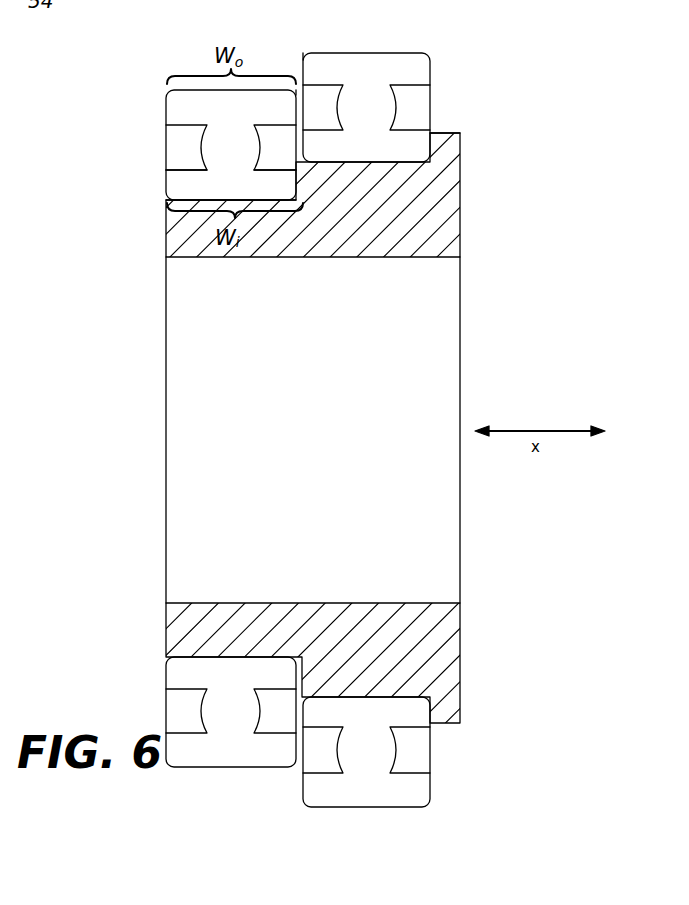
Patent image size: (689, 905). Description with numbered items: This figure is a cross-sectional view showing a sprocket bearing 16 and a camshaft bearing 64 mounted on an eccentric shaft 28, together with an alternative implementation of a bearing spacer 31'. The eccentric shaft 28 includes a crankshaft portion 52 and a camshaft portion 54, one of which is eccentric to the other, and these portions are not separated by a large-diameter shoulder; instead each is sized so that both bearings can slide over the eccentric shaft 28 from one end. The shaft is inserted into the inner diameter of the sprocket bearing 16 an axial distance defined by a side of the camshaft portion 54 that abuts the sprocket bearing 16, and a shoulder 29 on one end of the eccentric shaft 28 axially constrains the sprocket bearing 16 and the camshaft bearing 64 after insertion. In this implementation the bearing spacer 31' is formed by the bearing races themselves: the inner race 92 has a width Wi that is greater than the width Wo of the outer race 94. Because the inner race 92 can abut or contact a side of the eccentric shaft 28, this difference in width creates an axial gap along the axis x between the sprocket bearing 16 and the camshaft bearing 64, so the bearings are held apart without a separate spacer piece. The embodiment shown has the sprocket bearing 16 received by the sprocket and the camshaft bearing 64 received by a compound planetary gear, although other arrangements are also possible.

The sprocket bearing 16 is at (172, 185).
The eccentric shaft 28 is at (490, 198).
The shoulder 29 is at (458, 134).
The bearing spacer 31' is at (290, 47).
The crankshaft portion 52 is at (286, 657).
The camshaft portion 54 is at (385, 697).
The camshaft bearing 64 is at (440, 58).
The inner race 92 is at (283, 184).
The outer race 94 is at (190, 107).